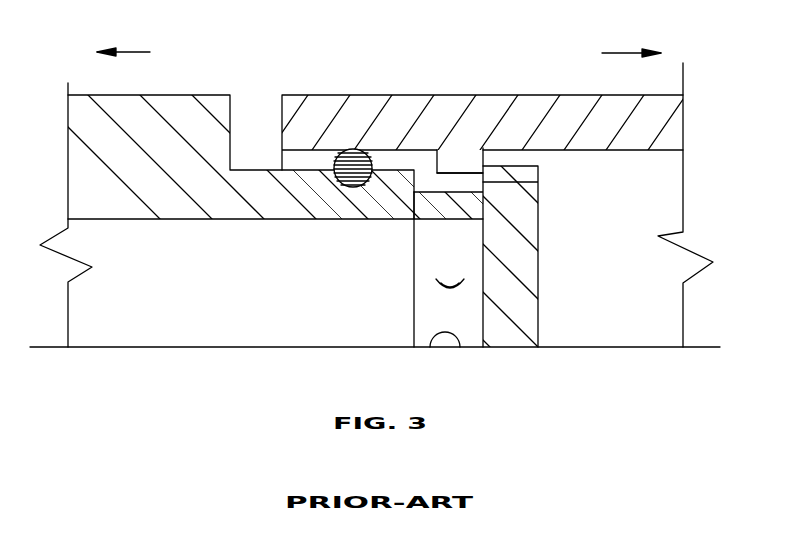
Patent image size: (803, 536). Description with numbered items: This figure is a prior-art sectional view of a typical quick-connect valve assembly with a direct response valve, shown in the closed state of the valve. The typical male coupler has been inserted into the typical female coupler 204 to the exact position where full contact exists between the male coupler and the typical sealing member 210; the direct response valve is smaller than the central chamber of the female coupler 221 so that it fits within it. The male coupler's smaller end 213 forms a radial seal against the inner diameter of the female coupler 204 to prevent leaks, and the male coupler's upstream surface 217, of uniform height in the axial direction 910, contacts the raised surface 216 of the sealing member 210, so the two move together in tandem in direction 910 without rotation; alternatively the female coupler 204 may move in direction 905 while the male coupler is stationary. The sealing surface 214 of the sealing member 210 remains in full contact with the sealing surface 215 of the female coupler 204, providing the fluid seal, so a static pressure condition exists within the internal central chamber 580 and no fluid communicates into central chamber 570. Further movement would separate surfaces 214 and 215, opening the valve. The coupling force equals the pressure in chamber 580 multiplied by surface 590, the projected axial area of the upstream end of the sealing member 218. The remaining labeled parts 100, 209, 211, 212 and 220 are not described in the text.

The base structure 100 is at (112, 343).
The typical female coupler 204 is at (605, 131).
The first panel 209 is at (157, 165).
The typical sealing member 210 is at (525, 319).
The fastener head 211 is at (455, 173).
The fastener 212 is at (453, 203).
The male coupler's smaller end 213 is at (320, 193).
The sealing surface 214 is at (538, 182).
The sealing surface 215 is at (465, 173).
The raised surface 216 is at (417, 213).
The upstream surface 217 is at (418, 183).
The upstream end of the sealing member 218 is at (517, 257).
The panel edge 220 is at (190, 222).
The central chamber of the typical female coupler 221 is at (595, 150).
The central chamber 570 is at (316, 323).
The internal central chamber 580 is at (624, 322).
The surface 590 is at (538, 222).
The direction 905 is at (148, 47).
The direction 910 is at (638, 48).